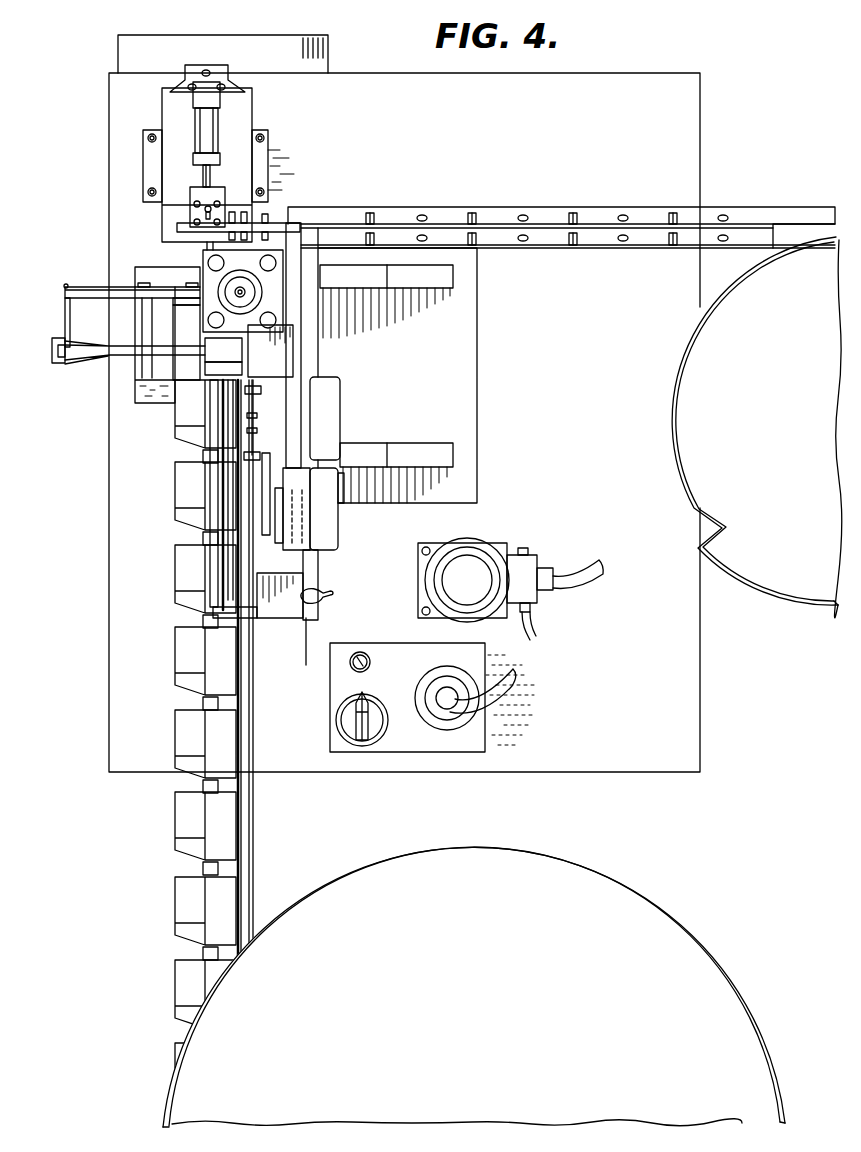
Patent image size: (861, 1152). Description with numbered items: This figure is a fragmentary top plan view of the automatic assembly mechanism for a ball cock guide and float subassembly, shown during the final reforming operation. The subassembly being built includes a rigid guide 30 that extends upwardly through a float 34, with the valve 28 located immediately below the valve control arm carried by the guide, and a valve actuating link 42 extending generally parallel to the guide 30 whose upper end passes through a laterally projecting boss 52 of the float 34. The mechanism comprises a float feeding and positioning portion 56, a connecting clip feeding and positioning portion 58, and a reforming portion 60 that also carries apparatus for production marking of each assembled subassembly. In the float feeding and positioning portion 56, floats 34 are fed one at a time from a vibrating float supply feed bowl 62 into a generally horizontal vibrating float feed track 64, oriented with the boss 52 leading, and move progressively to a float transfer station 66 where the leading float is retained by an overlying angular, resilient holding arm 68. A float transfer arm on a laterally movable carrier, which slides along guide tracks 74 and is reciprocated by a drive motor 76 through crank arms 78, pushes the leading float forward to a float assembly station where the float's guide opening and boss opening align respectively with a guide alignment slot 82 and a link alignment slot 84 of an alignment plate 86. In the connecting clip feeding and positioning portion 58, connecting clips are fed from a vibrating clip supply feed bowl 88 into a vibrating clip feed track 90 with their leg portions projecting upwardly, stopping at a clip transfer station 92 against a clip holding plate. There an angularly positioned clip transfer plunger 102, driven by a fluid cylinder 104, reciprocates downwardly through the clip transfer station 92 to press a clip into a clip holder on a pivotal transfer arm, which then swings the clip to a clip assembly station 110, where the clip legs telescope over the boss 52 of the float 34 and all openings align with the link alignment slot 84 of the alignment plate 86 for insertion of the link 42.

The valve 28 is at (54, 340).
The rigid guide 30 is at (90, 358).
The float 34 is at (188, 356).
The valve actuating link 42 is at (95, 288).
The boss 52 is at (201, 539).
The float feeding and positioning portion 56 is at (172, 631).
The connecting clip feeding and positioning portion 58 is at (137, 161).
The reforming portion 60 is at (291, 298).
The float supply feed bowl 62 is at (167, 1057).
The float feed track 64 is at (252, 832).
The float transfer station 66 is at (197, 430).
The resilient holding arm 68 is at (240, 812).
The guide tracks 74 is at (230, 598).
The drive motor 76 is at (302, 520).
The crank arms 78 is at (266, 470).
The guide alignment slot 82 is at (150, 356).
The link alignment slot 84 is at (140, 282).
The alignment plate 86 is at (143, 332).
The clip supply feed bowl 88 is at (790, 597).
The clip feed track 90 is at (517, 224).
The clip transfer station 92 is at (178, 235).
The clip transfer plunger 102 is at (205, 176).
The fluid cylinder 104 is at (213, 131).
The clip assembly station 110 is at (190, 279).